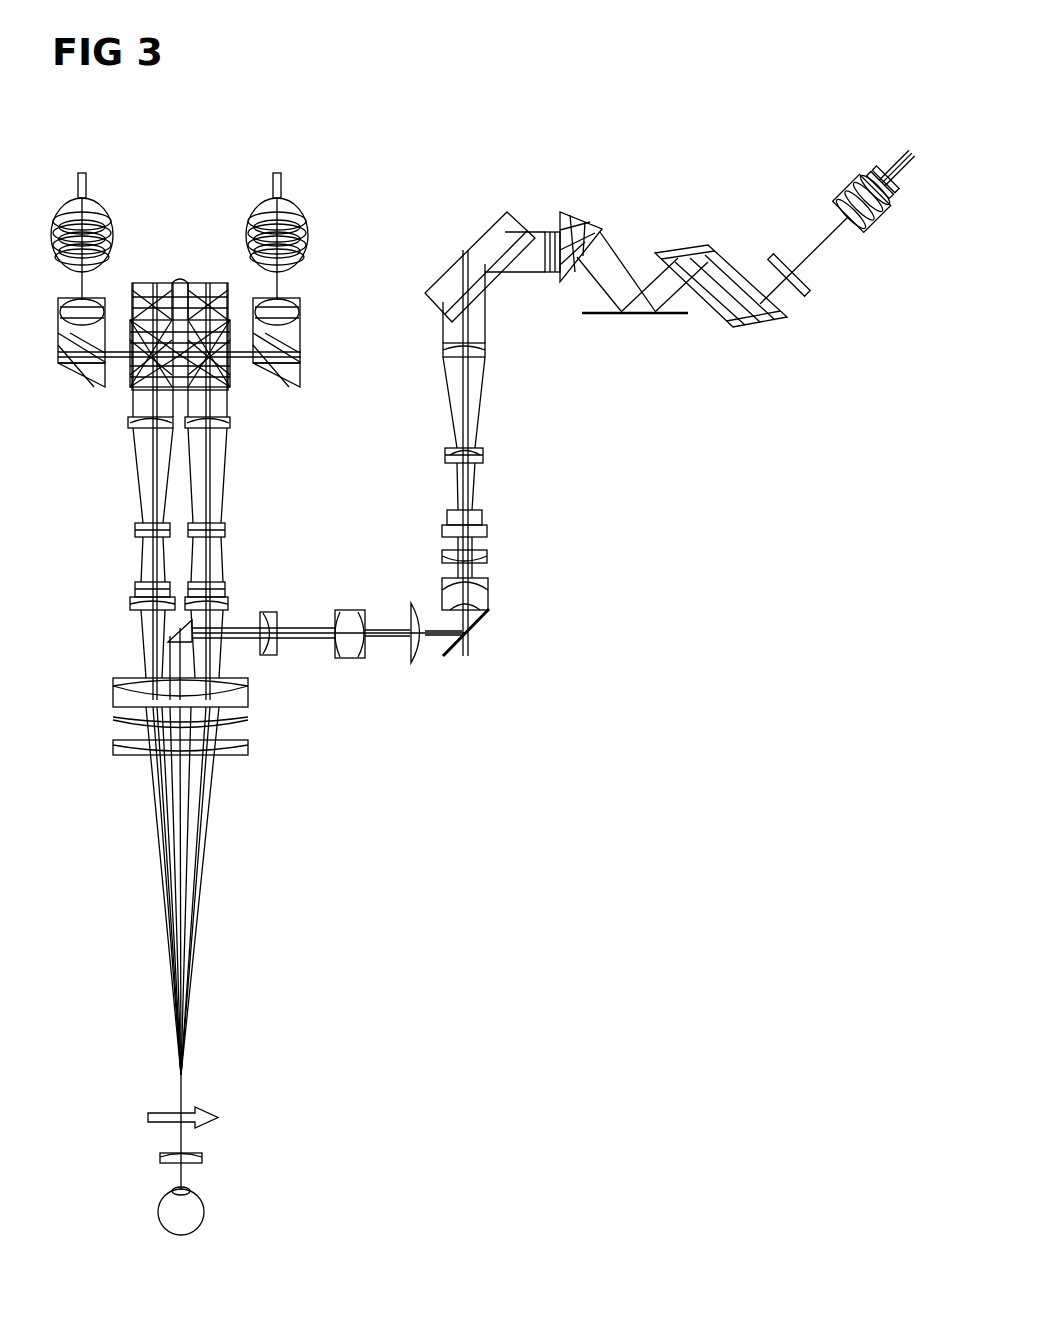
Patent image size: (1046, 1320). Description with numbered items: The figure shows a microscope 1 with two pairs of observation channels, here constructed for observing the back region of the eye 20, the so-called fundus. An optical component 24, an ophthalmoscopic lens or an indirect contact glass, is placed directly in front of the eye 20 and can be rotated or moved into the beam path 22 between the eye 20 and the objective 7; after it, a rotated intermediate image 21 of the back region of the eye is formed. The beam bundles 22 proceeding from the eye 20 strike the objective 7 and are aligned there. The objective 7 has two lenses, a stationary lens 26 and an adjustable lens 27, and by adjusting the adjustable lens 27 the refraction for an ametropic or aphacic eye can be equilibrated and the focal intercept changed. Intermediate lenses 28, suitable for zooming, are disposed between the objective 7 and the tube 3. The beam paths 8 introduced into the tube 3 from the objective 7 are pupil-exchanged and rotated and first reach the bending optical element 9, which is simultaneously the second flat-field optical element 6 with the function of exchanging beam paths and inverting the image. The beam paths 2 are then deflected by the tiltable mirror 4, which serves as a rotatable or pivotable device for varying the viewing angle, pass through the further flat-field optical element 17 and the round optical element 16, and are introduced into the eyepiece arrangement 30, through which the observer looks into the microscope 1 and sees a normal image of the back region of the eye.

The microscope 1 is at (520, 120).
The beam paths 2 is at (605, 273).
The tube 3 is at (640, 178).
The tiltable mirror 4 is at (596, 316).
The second flat-field optical element 6 is at (500, 234).
The objective 7 is at (116, 688).
The beam paths 8 is at (472, 387).
The bending optical element 9 is at (468, 258).
The round optical element 16 is at (773, 257).
The flat-field optical element 17 is at (756, 326).
The eye 20 is at (167, 1213).
The rotated intermediate image 21 is at (196, 1110).
The beam bundles 22 is at (158, 830).
The optical component 24 is at (160, 1157).
The stationary lens 26 is at (246, 748).
The adjustable lens 27 is at (236, 722).
The intermediate lenses 28 is at (485, 451).
The eyepiece arrangement 30 is at (862, 162).